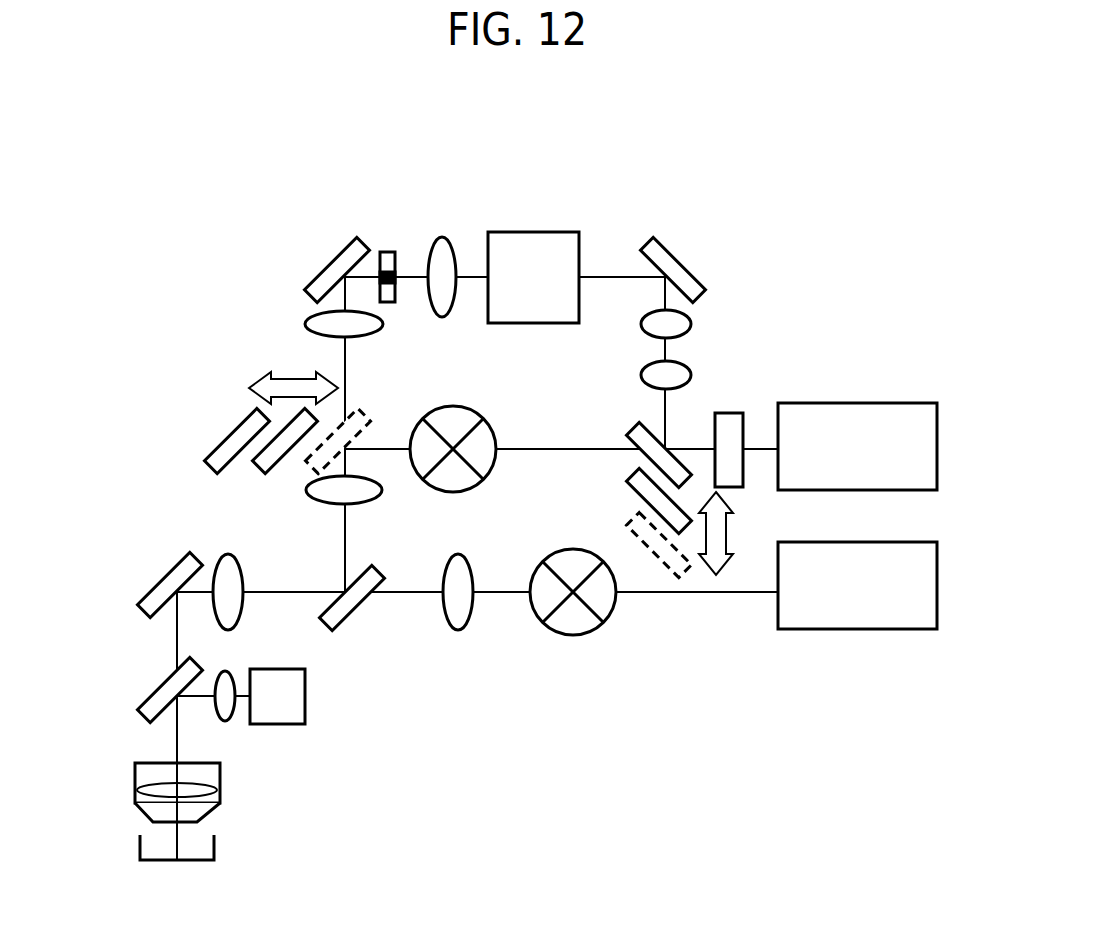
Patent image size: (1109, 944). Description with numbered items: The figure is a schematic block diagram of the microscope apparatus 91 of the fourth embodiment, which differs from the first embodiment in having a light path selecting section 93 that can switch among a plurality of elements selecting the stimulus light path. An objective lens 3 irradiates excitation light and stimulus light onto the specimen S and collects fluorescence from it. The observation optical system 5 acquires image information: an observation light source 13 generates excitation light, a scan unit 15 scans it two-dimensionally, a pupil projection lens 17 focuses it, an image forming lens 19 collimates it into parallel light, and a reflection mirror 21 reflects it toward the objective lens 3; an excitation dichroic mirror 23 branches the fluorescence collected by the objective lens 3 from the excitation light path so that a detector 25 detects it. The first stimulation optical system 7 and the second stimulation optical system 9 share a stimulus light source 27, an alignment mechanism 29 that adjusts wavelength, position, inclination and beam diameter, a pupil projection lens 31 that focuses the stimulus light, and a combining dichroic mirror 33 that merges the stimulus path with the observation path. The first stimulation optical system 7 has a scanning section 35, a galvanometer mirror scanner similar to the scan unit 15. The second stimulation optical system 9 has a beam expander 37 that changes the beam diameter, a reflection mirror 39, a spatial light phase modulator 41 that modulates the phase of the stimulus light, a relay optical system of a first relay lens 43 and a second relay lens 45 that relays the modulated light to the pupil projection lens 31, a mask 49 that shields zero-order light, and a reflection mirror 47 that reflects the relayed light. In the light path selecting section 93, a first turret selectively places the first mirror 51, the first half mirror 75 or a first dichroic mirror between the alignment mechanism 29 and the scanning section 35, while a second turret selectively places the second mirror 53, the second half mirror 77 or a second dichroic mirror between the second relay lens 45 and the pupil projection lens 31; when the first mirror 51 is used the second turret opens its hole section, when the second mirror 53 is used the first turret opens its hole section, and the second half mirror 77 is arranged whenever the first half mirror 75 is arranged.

The microscope apparatus 91 is at (130, 197).
The second stimulation optical system 9 is at (623, 177).
The first stimulation optical system 7 is at (531, 404).
The observation optical system 5 is at (616, 703).
The reflection mirror 47 is at (337, 250).
The mask 49 is at (390, 252).
The first relay lens 43 is at (439, 237).
The spatial light phase modulator 41 is at (528, 232).
The reflection mirror 39 is at (682, 258).
The second relay lens 45 is at (305, 324).
The beam expander 37 is at (695, 310).
The scanning section 35 is at (453, 406).
The first mirror 51 is at (633, 432).
The first half mirror 75 is at (630, 475).
The alignment mechanism 29 is at (736, 411).
The stimulus light source 27 is at (852, 403).
The observation light source 13 is at (852, 630).
The light path selecting section 93 is at (222, 416).
The second mirror 53 is at (208, 463).
The second half mirror 77 is at (256, 470).
The pupil projection lens 31 is at (320, 503).
The reflection mirror 21 is at (158, 583).
The image forming lens 19 is at (243, 608).
The combining dichroic mirror 33 is at (350, 622).
The pupil projection lens 17 is at (458, 632).
The scan unit 15 is at (573, 635).
The excitation dichroic mirror 23 is at (152, 692).
The detector 25 is at (276, 724).
The objective lens 3 is at (135, 781).
The specimen S is at (140, 848).